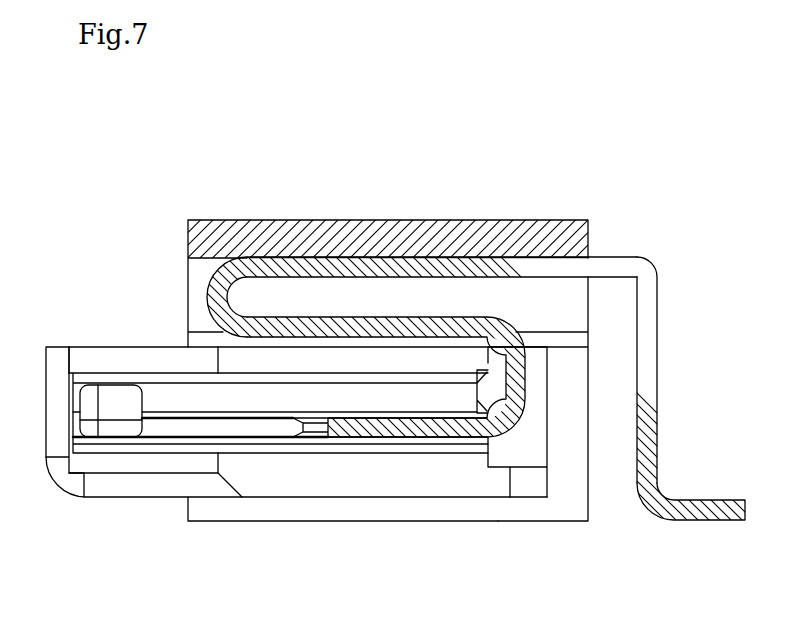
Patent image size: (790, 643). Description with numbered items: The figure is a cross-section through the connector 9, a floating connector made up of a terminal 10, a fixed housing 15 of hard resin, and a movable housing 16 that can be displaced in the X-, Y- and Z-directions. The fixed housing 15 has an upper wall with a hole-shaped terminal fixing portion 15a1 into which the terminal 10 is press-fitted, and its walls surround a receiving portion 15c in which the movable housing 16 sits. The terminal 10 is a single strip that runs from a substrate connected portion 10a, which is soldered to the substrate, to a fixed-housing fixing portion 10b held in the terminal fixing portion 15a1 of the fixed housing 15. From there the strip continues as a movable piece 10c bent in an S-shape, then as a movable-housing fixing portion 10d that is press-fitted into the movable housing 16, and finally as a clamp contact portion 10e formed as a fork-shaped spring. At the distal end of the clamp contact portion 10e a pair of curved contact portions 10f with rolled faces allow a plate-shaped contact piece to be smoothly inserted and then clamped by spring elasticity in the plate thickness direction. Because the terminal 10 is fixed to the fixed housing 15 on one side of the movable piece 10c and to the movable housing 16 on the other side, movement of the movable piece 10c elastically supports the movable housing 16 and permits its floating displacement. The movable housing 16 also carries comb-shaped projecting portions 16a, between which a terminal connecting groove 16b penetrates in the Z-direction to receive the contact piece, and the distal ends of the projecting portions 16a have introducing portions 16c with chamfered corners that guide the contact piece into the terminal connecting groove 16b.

The connector 9 is at (651, 172).
The terminal 10 is at (656, 270).
The substrate connected portion 10a is at (712, 498).
The fixed-housing fixing portion 10b is at (503, 262).
The movable piece 10c is at (207, 307).
The movable-housing fixing portion 10d is at (420, 425).
The clamp contact portion 10e is at (233, 427).
The curved contact portion 10f is at (108, 412).
The fixed housing 15 is at (332, 220).
The terminal fixing portion 15a1 is at (557, 262).
The receiving portion 15c is at (565, 492).
The movable housing 16 is at (327, 497).
The projecting portion 16a is at (89, 347).
The terminal connecting groove 16b is at (150, 463).
The introducing portion 16c is at (57, 365).